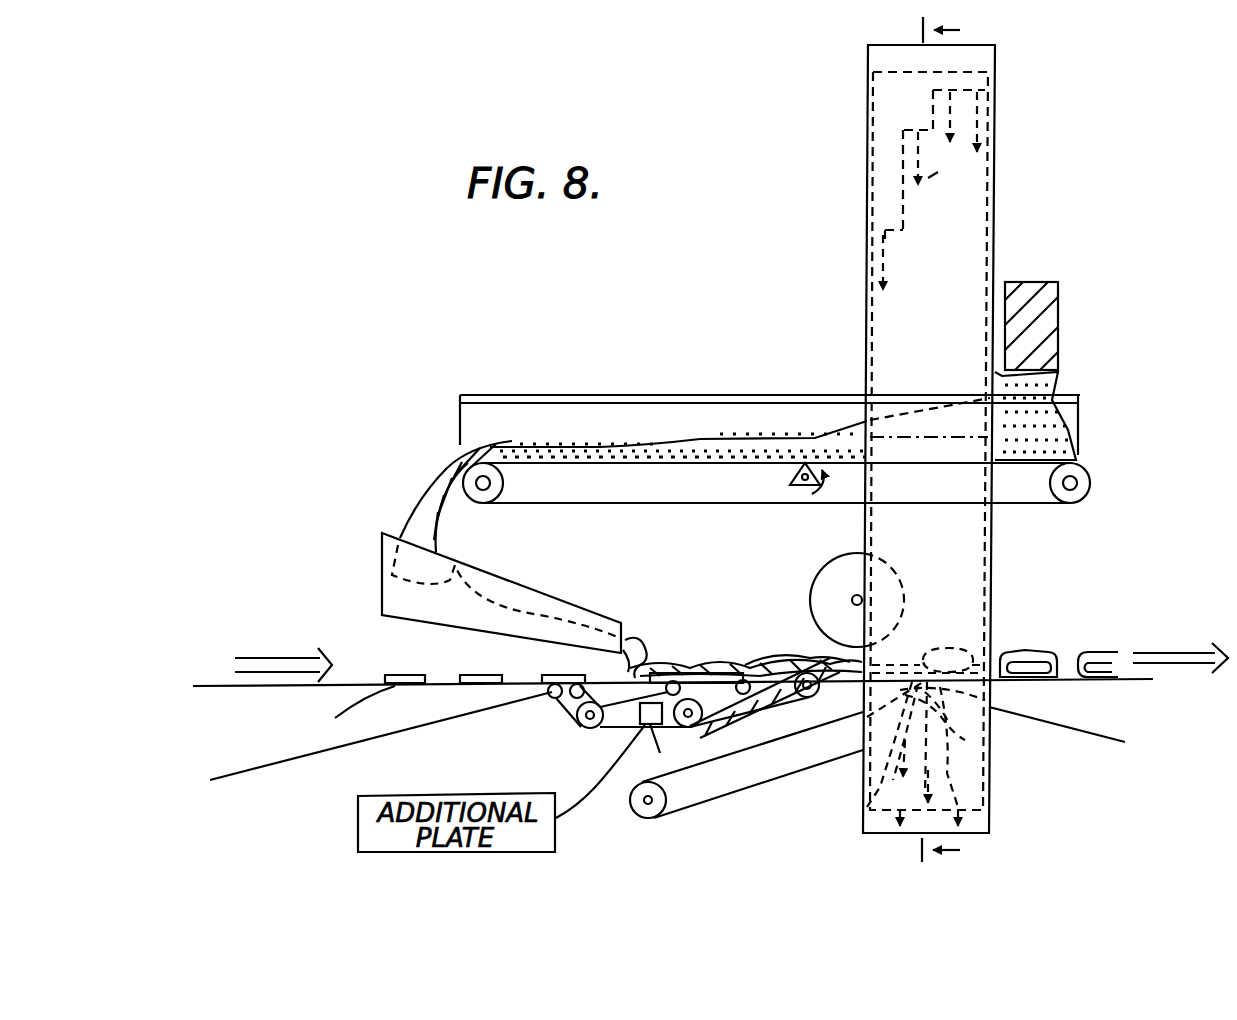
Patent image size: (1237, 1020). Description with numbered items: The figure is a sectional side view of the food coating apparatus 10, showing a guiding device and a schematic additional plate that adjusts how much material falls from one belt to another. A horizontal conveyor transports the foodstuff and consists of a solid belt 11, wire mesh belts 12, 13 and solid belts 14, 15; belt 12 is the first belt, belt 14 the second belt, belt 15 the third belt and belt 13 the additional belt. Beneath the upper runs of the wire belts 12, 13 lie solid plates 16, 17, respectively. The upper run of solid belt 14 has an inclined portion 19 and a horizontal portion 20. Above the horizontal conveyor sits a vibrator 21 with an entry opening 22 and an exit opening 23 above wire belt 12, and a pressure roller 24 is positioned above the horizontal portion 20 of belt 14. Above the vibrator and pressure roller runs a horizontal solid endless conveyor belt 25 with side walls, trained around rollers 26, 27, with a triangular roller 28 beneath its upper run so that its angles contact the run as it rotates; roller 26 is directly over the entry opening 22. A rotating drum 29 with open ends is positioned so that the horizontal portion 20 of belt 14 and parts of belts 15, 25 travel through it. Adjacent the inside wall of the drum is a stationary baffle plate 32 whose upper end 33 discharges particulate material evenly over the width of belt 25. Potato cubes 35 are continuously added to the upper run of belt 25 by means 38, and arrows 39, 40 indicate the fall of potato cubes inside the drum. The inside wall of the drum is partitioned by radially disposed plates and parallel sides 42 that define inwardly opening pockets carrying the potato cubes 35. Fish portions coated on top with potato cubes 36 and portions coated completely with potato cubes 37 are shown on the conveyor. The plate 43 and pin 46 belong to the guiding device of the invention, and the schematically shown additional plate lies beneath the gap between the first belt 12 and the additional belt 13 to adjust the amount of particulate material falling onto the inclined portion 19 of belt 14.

The apparatus 10 is at (322, 468).
The solid belt 11 is at (285, 687).
The wire mesh belt 12 is at (570, 697).
The wire mesh belt 13 is at (693, 730).
The solid belt 14 is at (800, 740).
The solid belt 15 is at (1110, 681).
The solid plate 16 is at (580, 726).
The solid plate 17 is at (750, 713).
The inclined portion 19 is at (778, 695).
The horizontal portion 20 is at (827, 672).
The vibrator 21 is at (382, 598).
The entry opening 22 is at (395, 552).
The exit opening 23 is at (665, 603).
The pressure roller 24 is at (846, 584).
The horizontal solid endless conveyor belt 25 is at (583, 447).
The roller 26 is at (496, 498).
The roller 27 is at (1078, 472).
The triangular roller 28 is at (805, 486).
The rotating drum 29 is at (963, 198).
The stationary baffle plate 32 is at (950, 258).
The upper end of baffle plate 33 is at (903, 140).
The potato cubes 35 is at (1010, 452).
The battered frozen fish portions coated on top with potato cubes 36 is at (728, 672).
The battered frozen fish portions coated completely with potato cubes 37 is at (1025, 660).
The means for adding potato cubes 38 is at (1068, 366).
The arrow indicating fall of potato cubes 39 is at (927, 768).
The arrow indicating fall of potato cubes 40 is at (933, 175).
The parallel sides 42 is at (980, 52).
The plate 43 is at (923, 710).
The pin 46 is at (930, 702).